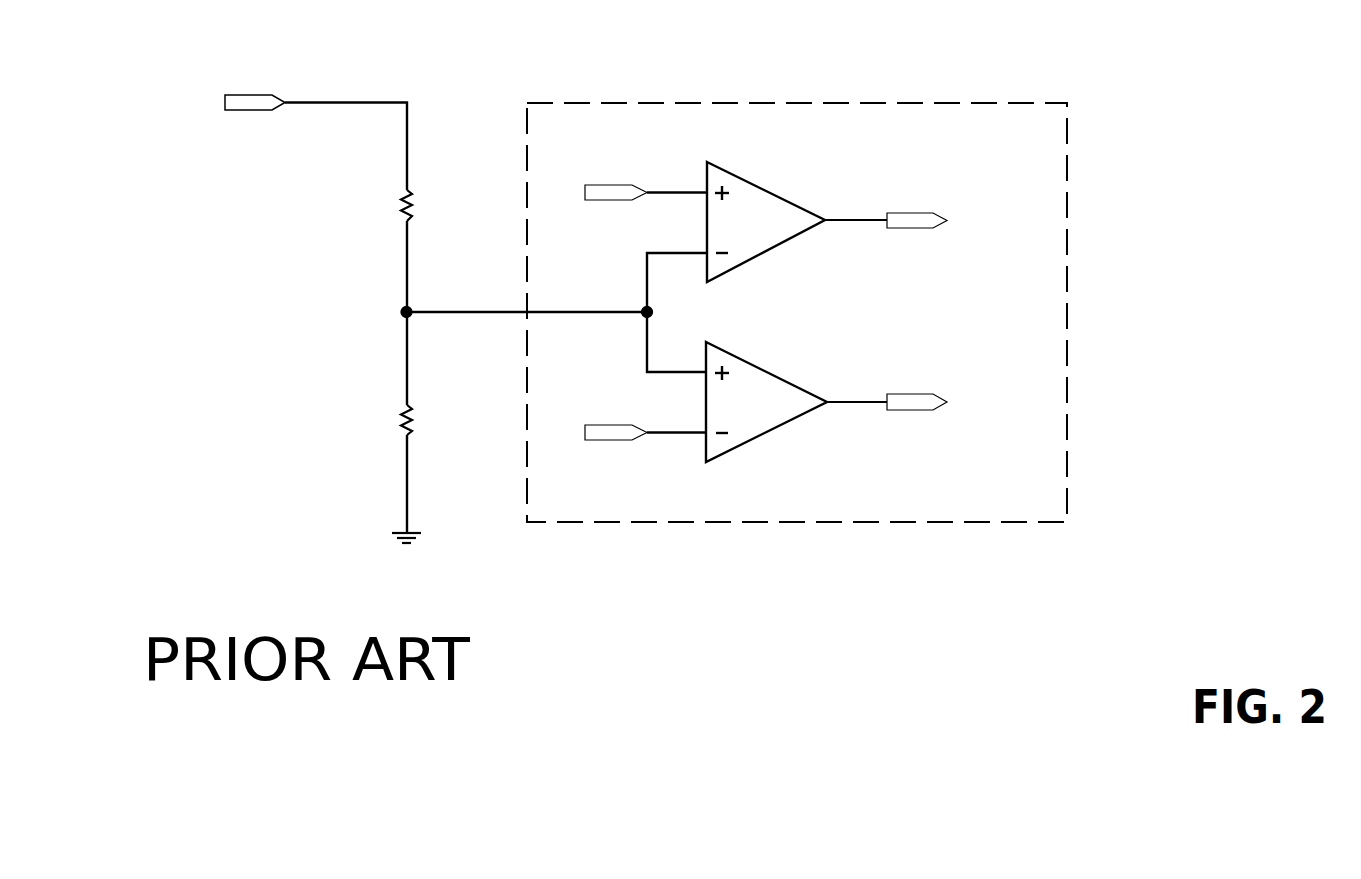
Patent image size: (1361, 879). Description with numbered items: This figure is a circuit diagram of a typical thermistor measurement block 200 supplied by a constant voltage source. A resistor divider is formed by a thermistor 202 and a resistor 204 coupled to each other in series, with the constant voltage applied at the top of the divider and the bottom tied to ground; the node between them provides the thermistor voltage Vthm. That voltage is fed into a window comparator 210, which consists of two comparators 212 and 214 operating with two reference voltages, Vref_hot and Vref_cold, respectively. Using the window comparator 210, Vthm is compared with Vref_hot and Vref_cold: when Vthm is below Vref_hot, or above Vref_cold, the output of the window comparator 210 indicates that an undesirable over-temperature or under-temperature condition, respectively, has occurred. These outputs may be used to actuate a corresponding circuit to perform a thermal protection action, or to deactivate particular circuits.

The thermistor measurement block 200 is at (930, 50).
The thermistor 202 is at (406, 405).
The resistor 204 is at (407, 190).
The window comparator 210 is at (692, 103).
The comparator 212 is at (755, 180).
The comparator 214 is at (753, 362).